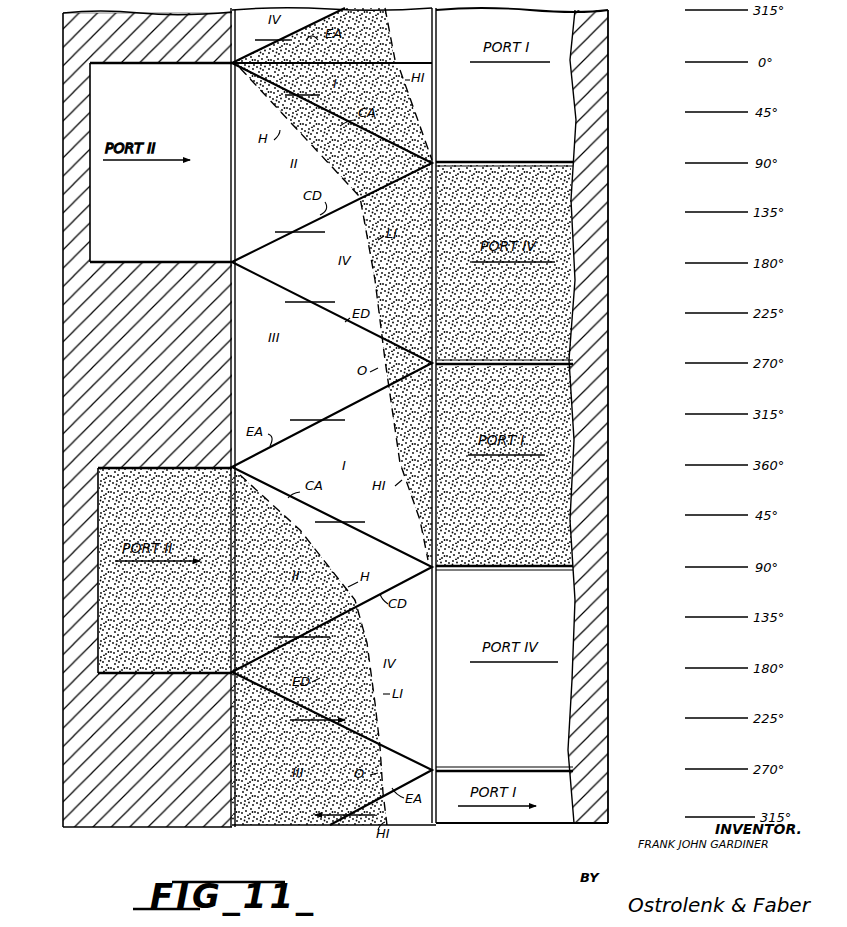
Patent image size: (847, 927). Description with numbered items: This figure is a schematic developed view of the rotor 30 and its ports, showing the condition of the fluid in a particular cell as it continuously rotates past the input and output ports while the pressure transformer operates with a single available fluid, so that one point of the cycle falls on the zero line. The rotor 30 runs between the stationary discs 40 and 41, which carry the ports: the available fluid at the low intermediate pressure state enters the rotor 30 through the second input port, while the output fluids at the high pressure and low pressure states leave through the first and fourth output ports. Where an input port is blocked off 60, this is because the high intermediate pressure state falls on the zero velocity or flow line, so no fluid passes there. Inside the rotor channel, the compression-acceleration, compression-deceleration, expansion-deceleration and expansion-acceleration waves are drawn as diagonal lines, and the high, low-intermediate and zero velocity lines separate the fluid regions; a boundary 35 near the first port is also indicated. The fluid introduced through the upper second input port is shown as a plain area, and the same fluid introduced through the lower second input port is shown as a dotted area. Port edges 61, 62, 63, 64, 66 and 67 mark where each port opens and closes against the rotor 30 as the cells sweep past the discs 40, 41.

The rotor 30 is at (258, 25).
The vane boundary line 35 is at (418, 60).
The stationary disc 40 is at (126, 13).
The stationary disc 41 is at (604, 52).
The blocked-off input port 60 is at (176, 40).
The port II upper edge 61 is at (165, 66).
The port I lower edge 62 is at (499, 161).
The port IV upper edge 63 is at (484, 171).
The port II lower edge 64 is at (192, 260).
The port IV lower edge 66 is at (505, 362).
The port I upper edge 67 is at (489, 370).